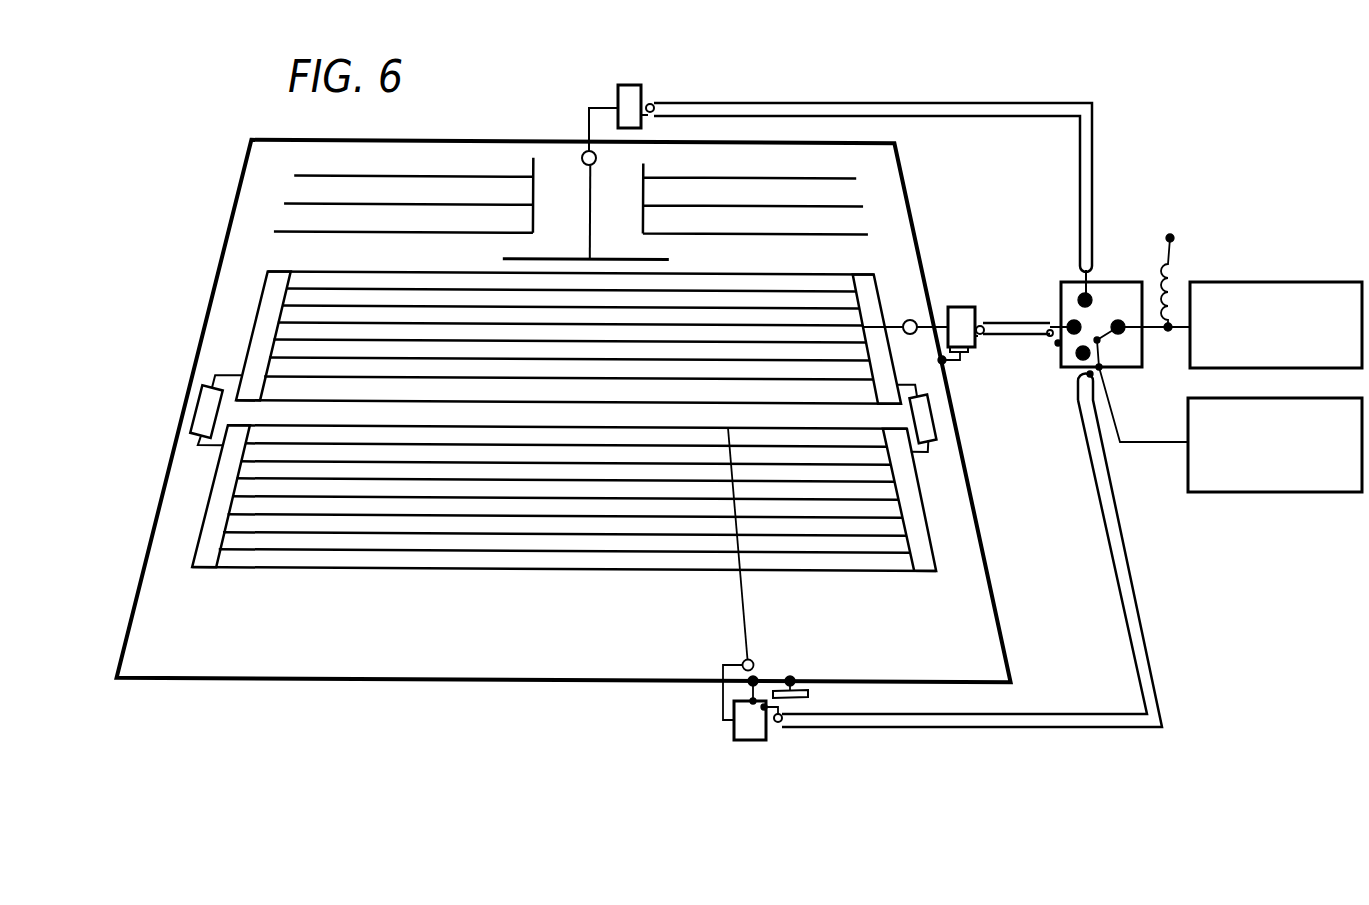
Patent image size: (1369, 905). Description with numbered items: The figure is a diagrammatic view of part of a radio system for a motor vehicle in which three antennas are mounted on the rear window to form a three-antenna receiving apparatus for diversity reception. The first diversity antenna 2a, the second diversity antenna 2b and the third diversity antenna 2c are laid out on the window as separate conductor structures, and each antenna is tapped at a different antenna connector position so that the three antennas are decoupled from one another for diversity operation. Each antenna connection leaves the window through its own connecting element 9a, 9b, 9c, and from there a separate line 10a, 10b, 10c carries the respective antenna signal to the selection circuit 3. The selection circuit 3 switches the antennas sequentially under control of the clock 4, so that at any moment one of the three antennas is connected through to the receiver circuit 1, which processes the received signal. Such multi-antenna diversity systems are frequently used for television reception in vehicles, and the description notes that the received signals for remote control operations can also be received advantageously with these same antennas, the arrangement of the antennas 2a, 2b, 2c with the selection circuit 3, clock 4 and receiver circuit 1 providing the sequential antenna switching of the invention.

The receiver circuit 1 is at (1335, 345).
The diversity antenna 2a is at (571, 165).
The diversity antenna 2b is at (595, 337).
The diversity antenna 2c is at (722, 706).
The selection circuit 3 is at (1139, 304).
The clock 4 is at (1317, 465).
The amplifier 9a is at (633, 92).
The amplifier 9b is at (966, 314).
The amplifier 9c is at (751, 733).
The connecting line 10a is at (866, 104).
The connecting line 10b is at (1033, 328).
The connecting line 10c is at (1133, 617).